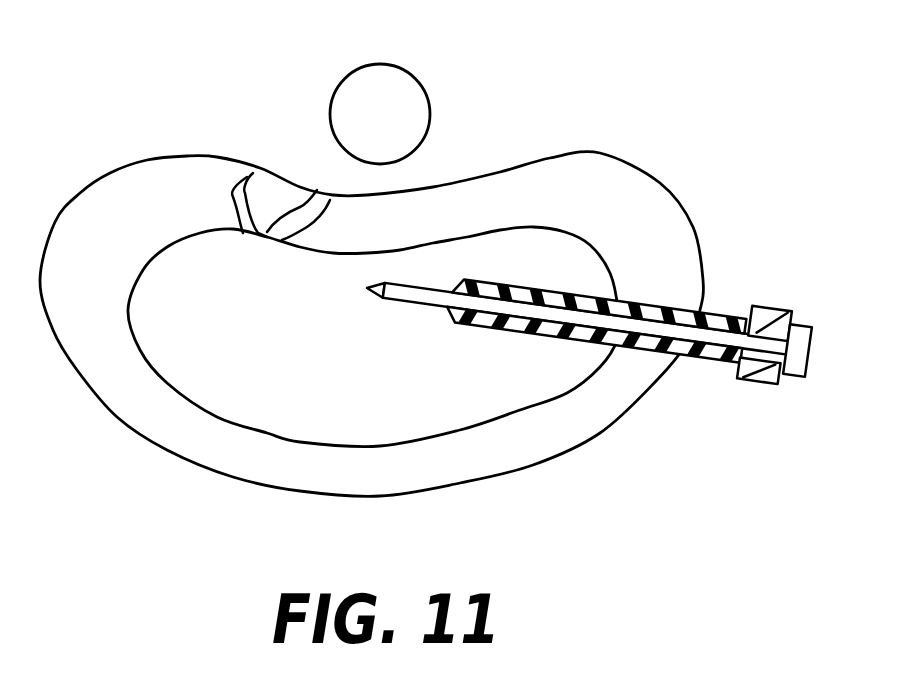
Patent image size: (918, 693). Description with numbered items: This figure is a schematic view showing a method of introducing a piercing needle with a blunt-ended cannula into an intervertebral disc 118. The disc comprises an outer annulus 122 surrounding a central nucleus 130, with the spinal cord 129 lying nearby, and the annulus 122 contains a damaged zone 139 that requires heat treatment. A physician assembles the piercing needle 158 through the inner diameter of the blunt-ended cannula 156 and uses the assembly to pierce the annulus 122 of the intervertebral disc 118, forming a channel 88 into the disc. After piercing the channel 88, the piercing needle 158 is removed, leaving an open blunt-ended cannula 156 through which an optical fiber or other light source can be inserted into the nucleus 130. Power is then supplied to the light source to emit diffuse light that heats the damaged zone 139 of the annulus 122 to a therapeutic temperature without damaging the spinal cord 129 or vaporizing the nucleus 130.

The intervertebral disc 118 is at (148, 94).
The annulus 122 is at (148, 194).
The spinal cord 129 is at (353, 70).
The nucleus 130 is at (334, 377).
The damaged zone 139 is at (277, 200).
The channel 88 is at (707, 318).
The blunt-ended cannula 156 is at (598, 372).
The piercing needle 158 is at (411, 330).